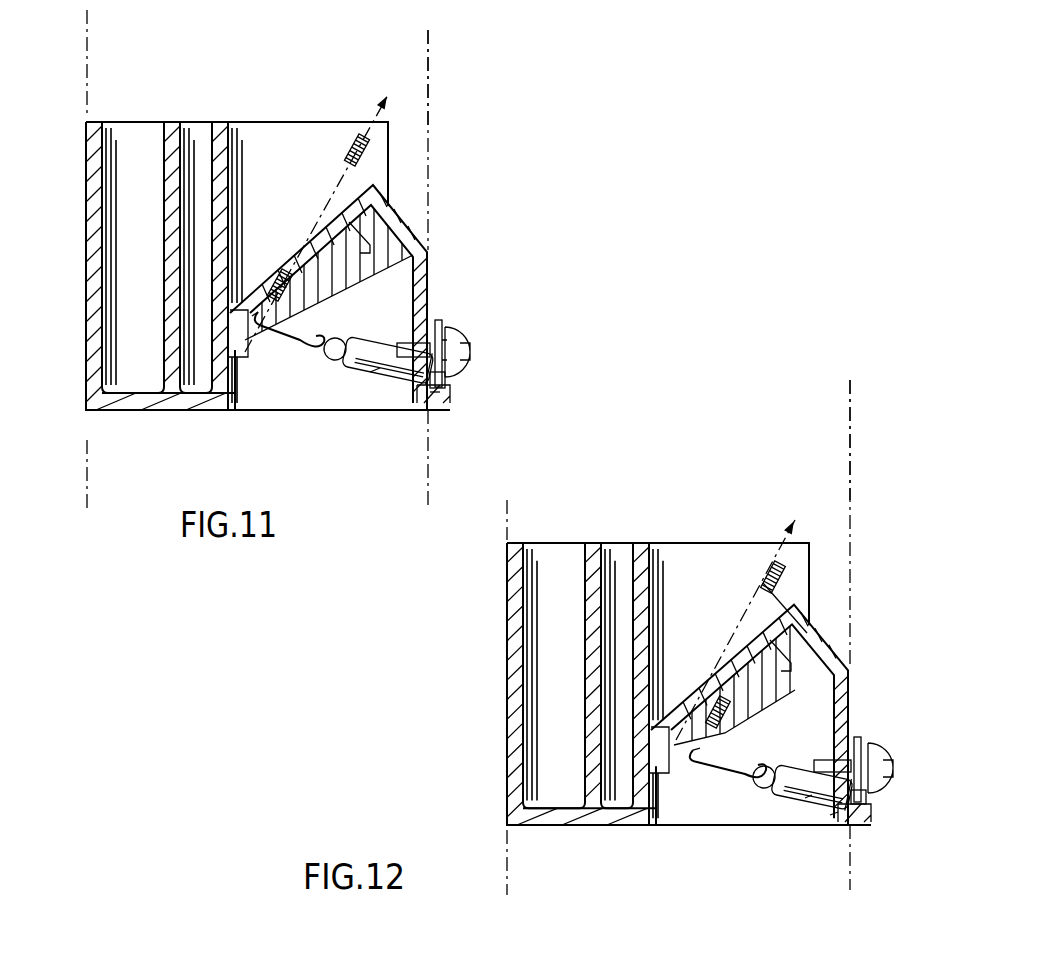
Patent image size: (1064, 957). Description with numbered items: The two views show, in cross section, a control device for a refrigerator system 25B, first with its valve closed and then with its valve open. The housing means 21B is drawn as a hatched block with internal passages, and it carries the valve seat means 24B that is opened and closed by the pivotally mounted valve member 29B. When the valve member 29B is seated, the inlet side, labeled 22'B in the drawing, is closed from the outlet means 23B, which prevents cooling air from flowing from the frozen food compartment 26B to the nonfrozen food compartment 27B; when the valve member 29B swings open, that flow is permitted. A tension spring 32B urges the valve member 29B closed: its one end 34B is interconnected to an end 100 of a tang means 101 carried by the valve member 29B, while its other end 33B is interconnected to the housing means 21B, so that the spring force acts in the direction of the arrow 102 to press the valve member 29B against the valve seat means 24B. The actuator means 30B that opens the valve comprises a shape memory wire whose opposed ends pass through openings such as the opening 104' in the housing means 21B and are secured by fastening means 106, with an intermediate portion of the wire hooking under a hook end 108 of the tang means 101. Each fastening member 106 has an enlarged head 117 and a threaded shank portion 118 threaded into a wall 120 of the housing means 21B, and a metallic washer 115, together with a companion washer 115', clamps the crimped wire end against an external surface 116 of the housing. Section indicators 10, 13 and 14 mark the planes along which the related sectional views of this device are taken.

In FIG. 11, the housing means 21B is at (86, 145).
In FIG. 12, the housing means 21B is at (507, 642).
In FIG. 11, the outlet means 23B is at (232, 128).
In FIG. 12, the outlet means 23B is at (657, 555).
In FIG. 11, the valve seat means 24B is at (243, 352).
In FIG. 12, the valve seat means 24B is at (675, 780).
In FIG. 11, the refrigerator system 25B is at (440, 52).
In FIG. 12, the refrigerator system 25B is at (857, 405).
In FIG. 11, the frozen food compartment 26B is at (86, 432).
In FIG. 12, the frozen food compartment 26B is at (507, 840).
In FIG. 11, the nonfrozen food compartment 27B is at (430, 125).
In FIG. 12, the nonfrozen food compartment 27B is at (878, 476).
In FIG. 11, the valve member 29B is at (372, 268).
In FIG. 12, the valve member 29B is at (795, 660).
In FIG. 11, the actuator means 30B is at (367, 328).
In FIG. 12, the actuator means 30B is at (788, 752).
In FIG. 12, the tension spring 32B is at (780, 582).
In FIG. 11, the other end of tension spring 33B is at (356, 135).
In FIG. 12, the other end of tension spring 33B is at (776, 548).
In FIG. 11, the one end of tension spring 34B is at (268, 300).
In FIG. 12, the one end of tension spring 34B is at (703, 735).
In FIG. 11, the end of tang means 100 is at (252, 316).
In FIG. 12, the end of tang means 100 is at (700, 748).
In FIG. 11, the tang means 101 is at (281, 340).
In FIG. 12, the tang means 101 is at (738, 790).
In FIG. 11, the arrow 102 is at (383, 100).
In FIG. 12, the arrow 102 is at (792, 520).
In FIG. 11, the opening 104' is at (474, 401).
In FIG. 11, the fastening means 106 is at (463, 333).
In FIG. 12, the fastening means 106 is at (886, 745).
In FIG. 11, the hook end of tang means 108 is at (322, 367).
In FIG. 12, the hook end of tang means 108 is at (762, 795).
In FIG. 11, the metallic washer 115 is at (460, 366).
In FIG. 12, the metallic washer 115 is at (864, 791).
In FIG. 11, the cylinder end 115' is at (343, 426).
In FIG. 12, the cylinder end 115' is at (772, 848).
In FIG. 11, the external surface 116 is at (440, 325).
In FIG. 11, the enlarged head 117 is at (470, 351).
In FIG. 11, the threaded shank portion 118 is at (415, 292).
In FIG. 12, the threaded shank portion 118 is at (836, 712).
In FIG. 11, the wall 120 is at (430, 268).
In FIG. 12, the wall 120 is at (850, 663).
In FIG. 11, the housing floor 22'B is at (401, 424).
In FIG. 12, the housing floor 22'B is at (816, 855).
In FIG. 11, the section line 10- 10 is at (462, 128).
In FIG. 11, the section line 13- 13 is at (55, 455).
In FIG. 12, the section line 14- 14 is at (545, 856).